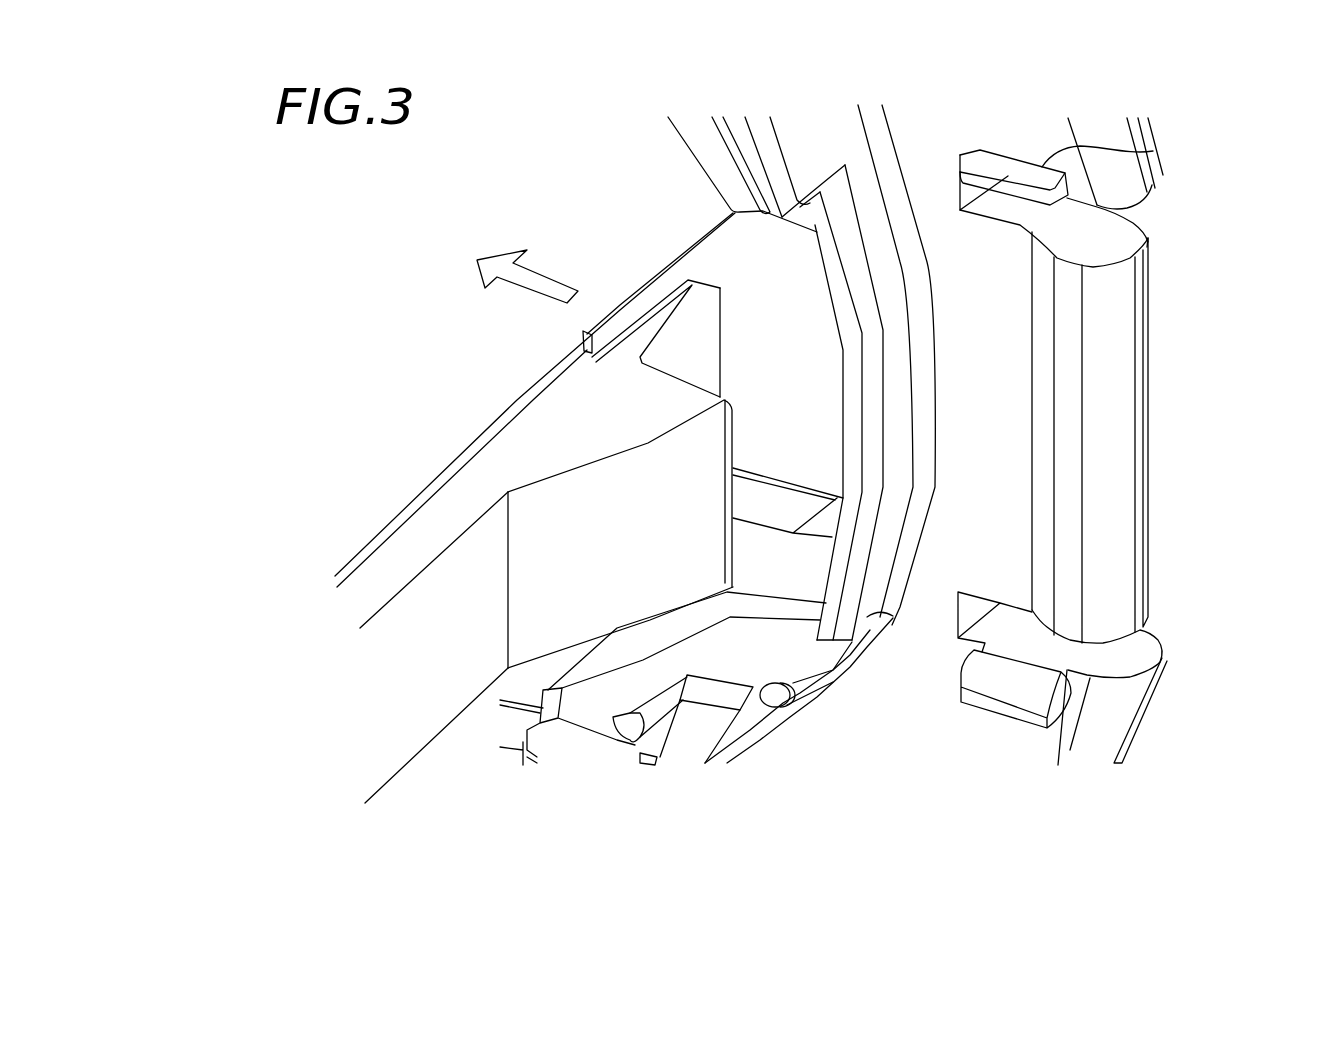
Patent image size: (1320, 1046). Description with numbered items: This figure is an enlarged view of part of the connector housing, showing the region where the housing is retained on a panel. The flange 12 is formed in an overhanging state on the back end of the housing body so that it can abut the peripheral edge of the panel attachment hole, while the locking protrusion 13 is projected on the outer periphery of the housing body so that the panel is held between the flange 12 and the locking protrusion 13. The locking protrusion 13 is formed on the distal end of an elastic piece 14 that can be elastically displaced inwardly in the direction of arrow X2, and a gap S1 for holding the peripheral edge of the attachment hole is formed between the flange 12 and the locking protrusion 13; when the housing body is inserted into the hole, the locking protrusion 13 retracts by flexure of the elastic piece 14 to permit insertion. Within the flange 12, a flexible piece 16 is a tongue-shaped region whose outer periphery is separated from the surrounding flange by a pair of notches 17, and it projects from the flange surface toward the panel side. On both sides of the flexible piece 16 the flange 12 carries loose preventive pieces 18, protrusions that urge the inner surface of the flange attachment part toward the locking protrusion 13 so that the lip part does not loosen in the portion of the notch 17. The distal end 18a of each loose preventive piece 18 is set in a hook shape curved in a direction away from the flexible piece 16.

The flange 12 is at (1107, 730).
The locking protrusion 13 is at (625, 593).
The elastic piece 14 is at (545, 432).
The flexible piece 16 is at (1145, 465).
The notch 17 is at (1145, 213).
The loose preventive piece 18 is at (1153, 151).
The distal end 18a is at (1008, 176).
The gap S1 is at (706, 347).
The arrow X2 is at (555, 277).